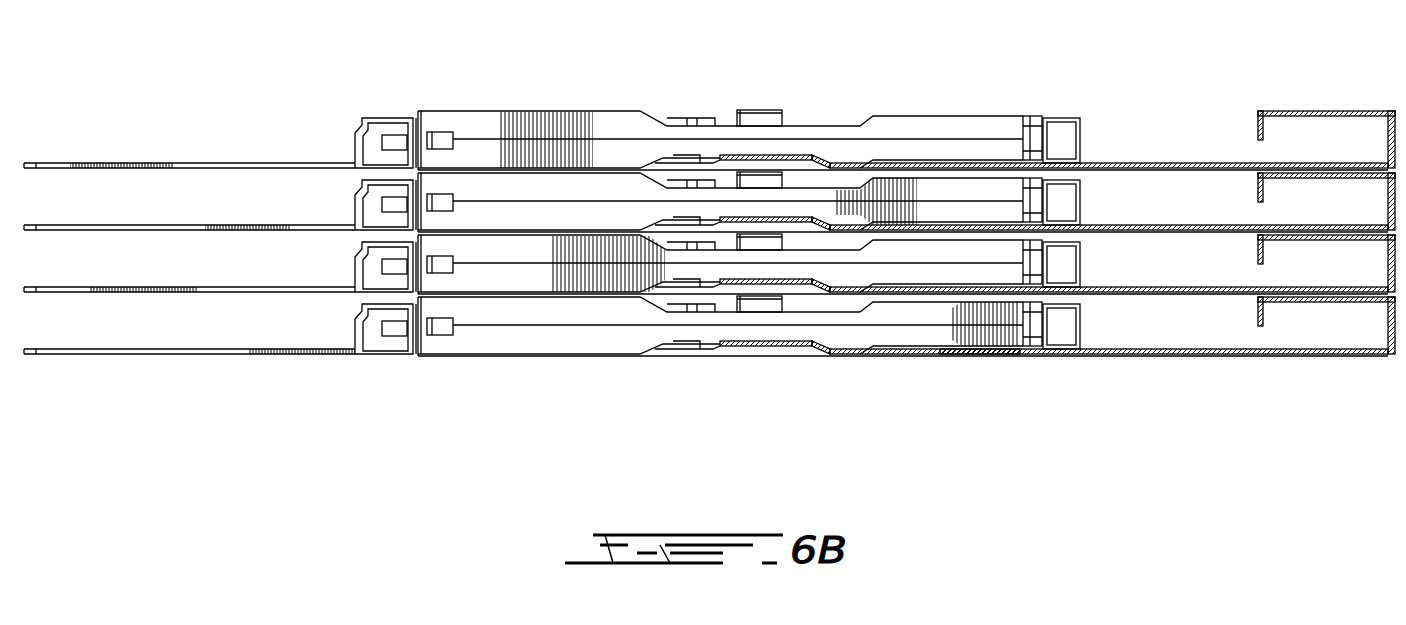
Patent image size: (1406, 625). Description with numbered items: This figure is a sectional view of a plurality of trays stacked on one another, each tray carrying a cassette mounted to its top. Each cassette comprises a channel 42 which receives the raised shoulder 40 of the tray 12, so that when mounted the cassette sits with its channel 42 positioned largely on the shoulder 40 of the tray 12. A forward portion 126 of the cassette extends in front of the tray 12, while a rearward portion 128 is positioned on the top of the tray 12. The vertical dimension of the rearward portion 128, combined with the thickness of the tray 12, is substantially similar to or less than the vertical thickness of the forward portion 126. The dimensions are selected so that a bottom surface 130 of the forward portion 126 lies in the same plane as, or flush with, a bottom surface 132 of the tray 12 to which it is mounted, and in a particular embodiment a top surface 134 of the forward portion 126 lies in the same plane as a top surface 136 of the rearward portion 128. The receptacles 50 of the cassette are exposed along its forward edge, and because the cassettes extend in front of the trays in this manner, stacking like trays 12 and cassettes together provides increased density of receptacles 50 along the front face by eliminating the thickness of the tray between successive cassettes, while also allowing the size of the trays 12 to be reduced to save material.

The tray 12 is at (1155, 163).
The raised shoulder 40 is at (754, 350).
The channel 42 is at (767, 126).
The receptacles 50 is at (356, 226).
The forward portion 126 is at (498, 308).
The rearward portion 128 is at (886, 312).
The bottom surface of the forward portion 130 is at (527, 357).
The bottom surface of the tray 132 is at (959, 355).
The top surface of the forward portion 134 is at (590, 296).
The top surface of the rearward portion 136 is at (975, 310).